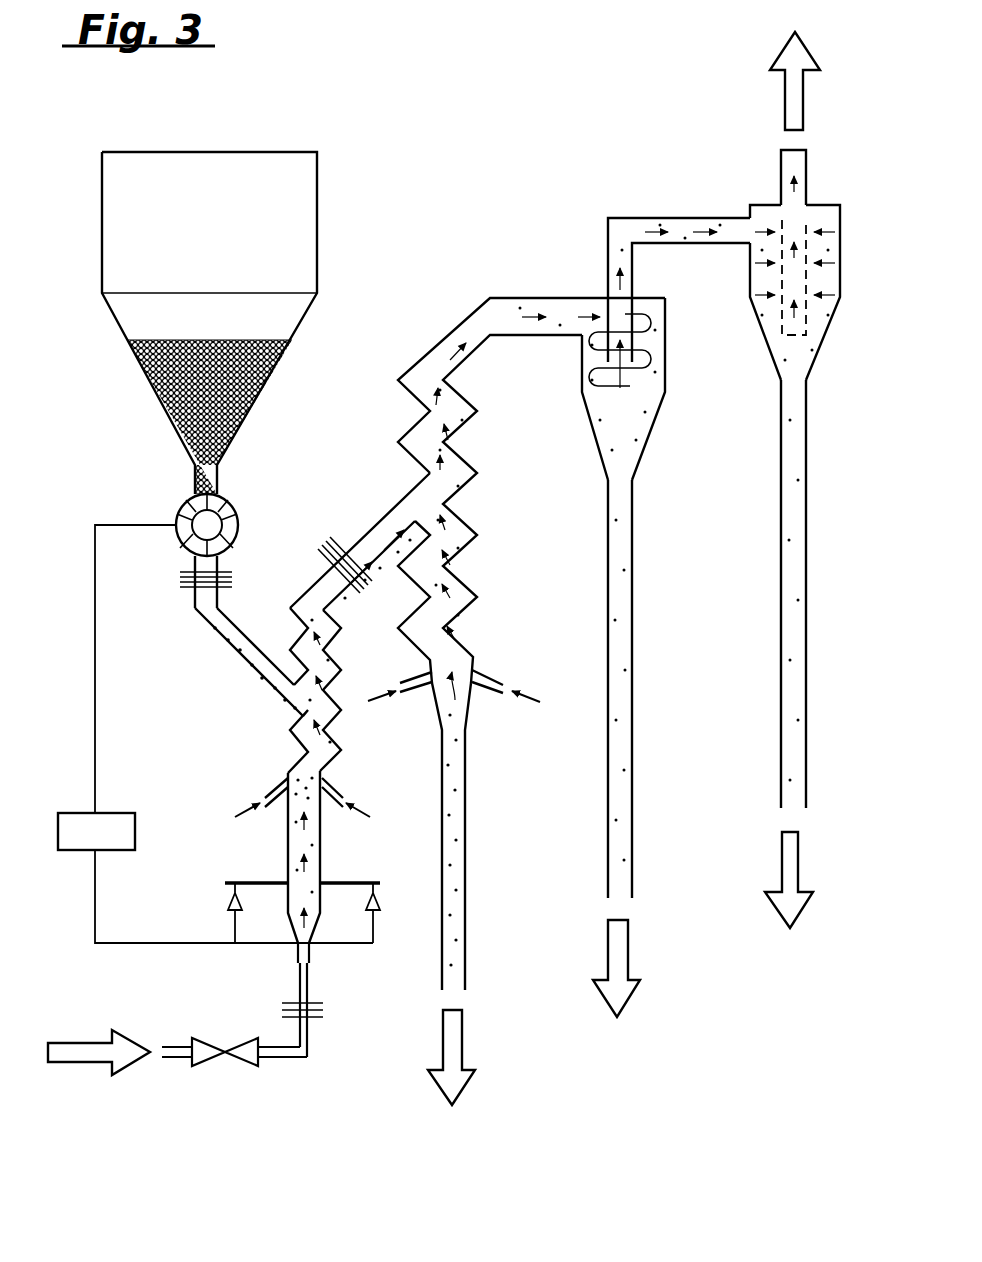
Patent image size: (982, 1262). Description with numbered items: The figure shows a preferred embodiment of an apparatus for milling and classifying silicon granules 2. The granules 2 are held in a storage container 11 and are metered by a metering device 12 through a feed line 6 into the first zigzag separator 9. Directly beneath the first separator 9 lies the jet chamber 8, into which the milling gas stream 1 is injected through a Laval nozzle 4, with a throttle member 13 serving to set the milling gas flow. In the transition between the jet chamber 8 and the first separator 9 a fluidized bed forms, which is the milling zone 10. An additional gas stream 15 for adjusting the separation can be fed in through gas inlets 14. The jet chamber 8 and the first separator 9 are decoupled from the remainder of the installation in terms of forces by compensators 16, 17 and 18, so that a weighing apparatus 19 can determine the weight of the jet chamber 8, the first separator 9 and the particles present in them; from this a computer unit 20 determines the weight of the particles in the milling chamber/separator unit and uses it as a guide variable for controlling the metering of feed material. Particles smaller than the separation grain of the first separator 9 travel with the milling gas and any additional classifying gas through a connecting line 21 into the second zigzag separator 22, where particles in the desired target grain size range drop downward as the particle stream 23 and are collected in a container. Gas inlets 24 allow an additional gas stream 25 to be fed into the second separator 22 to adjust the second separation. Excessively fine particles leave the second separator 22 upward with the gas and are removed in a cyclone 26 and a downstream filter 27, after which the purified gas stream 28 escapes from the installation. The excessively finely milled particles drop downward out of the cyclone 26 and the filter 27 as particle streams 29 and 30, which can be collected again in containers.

The milling gas stream 1 is at (88, 1053).
The silicon granules 2 is at (155, 396).
The Laval nozzle 4 is at (310, 953).
The feed line 6 is at (242, 657).
The jet chamber 8 is at (288, 850).
The first zigzag separator 9 is at (297, 718).
The milling zone 10 is at (295, 773).
The storage container 11 is at (118, 215).
The metering device 12 is at (178, 520).
The throttle member 13 is at (205, 1062).
The gas inlets 14 is at (333, 780).
The additional gas stream 15 is at (243, 816).
The compensator 16 is at (285, 1003).
The compensator 17 is at (190, 590).
The compensator 18 is at (325, 555).
The weighing apparatus 19 is at (230, 905).
The computer unit 20 is at (118, 822).
The connecting line 21 is at (387, 510).
The second zigzag separator 22 is at (462, 515).
The particle stream 23 is at (450, 1043).
The gas inlets 24 is at (497, 680).
The additional gas stream 25 is at (538, 702).
The cyclone 26 is at (650, 430).
The filter 27 is at (762, 345).
The gas stream 28 is at (793, 98).
The particle stream 29 is at (620, 947).
The particle stream 30 is at (793, 862).